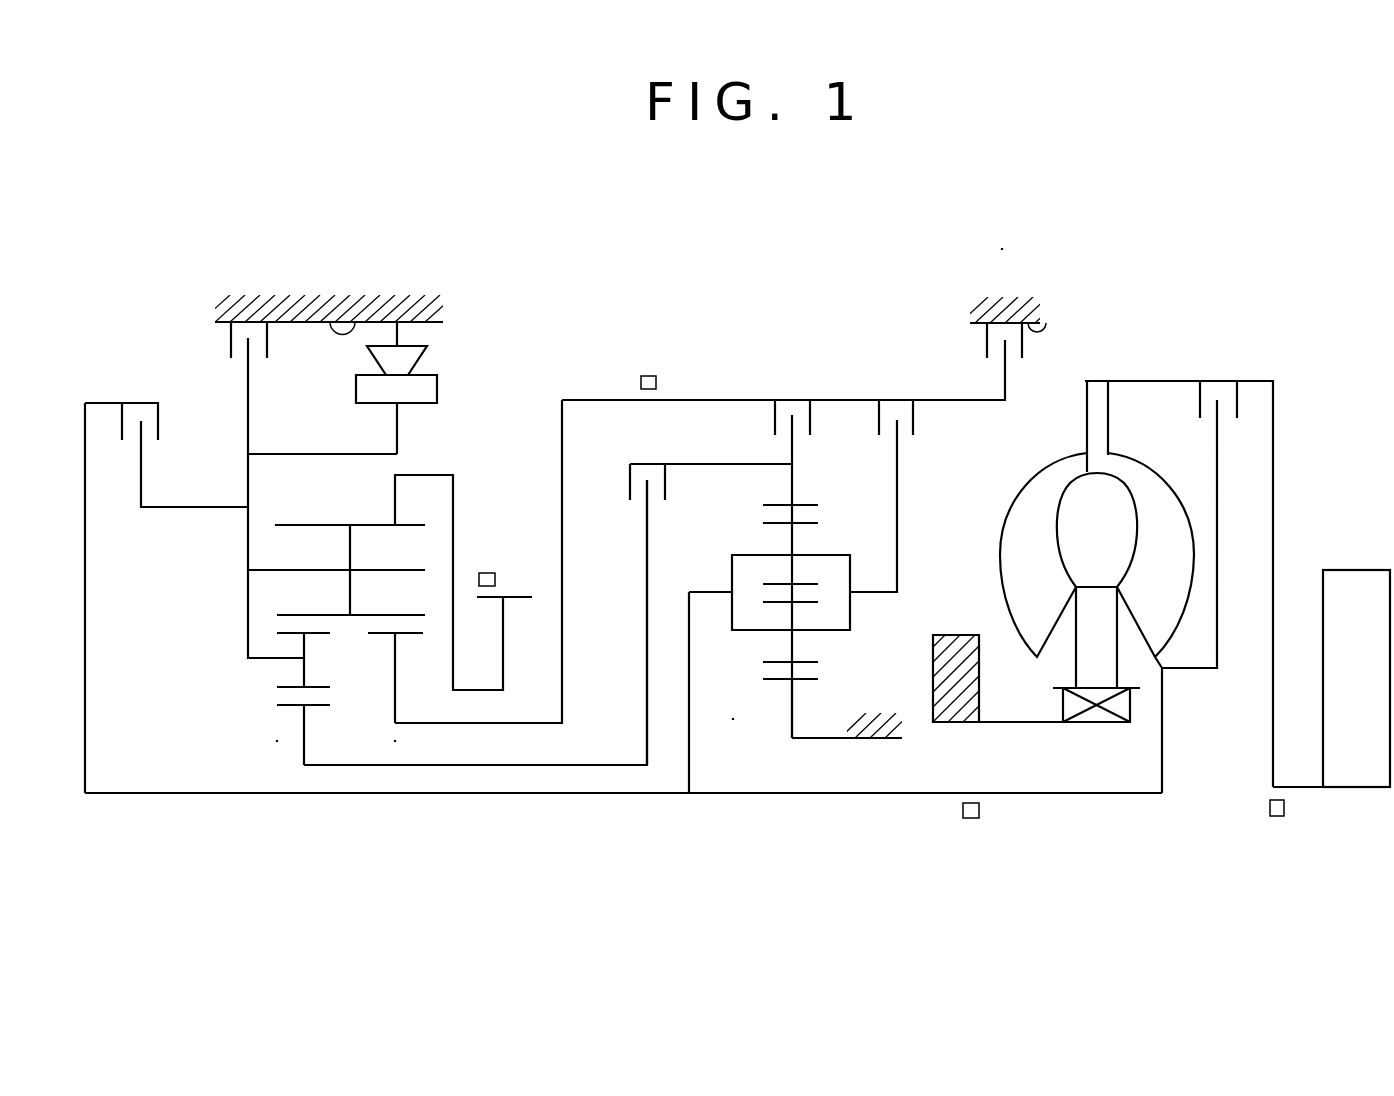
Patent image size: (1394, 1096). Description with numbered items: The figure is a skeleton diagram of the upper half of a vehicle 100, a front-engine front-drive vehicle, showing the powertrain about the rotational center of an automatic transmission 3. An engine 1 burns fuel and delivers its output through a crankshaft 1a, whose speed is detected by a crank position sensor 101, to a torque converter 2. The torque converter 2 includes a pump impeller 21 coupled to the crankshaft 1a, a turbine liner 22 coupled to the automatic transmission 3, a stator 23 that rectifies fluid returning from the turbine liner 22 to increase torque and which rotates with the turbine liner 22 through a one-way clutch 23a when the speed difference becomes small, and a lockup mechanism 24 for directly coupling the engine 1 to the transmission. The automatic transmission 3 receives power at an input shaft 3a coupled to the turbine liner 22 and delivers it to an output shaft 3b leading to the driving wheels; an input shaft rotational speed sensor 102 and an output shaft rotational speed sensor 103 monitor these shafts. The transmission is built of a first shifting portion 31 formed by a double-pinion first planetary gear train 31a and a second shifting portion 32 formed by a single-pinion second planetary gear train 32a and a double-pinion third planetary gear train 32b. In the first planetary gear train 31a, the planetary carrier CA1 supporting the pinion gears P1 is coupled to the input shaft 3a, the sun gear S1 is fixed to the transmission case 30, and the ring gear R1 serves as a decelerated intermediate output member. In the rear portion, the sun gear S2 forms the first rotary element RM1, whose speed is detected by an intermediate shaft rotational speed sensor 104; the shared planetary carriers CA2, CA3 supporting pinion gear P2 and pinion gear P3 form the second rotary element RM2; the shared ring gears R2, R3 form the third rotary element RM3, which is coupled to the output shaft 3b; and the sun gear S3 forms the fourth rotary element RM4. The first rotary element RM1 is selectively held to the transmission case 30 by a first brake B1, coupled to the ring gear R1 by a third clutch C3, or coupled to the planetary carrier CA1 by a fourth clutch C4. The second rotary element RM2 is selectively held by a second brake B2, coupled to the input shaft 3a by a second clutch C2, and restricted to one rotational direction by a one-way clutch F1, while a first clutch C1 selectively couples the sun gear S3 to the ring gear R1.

The engine 1 is at (1370, 570).
The crankshaft 1a is at (1302, 790).
The torque converter 2 is at (1137, 544).
The automatic transmission 3 is at (795, 308).
The input shaft 3a is at (832, 793).
The output shaft 3b is at (510, 597).
The pump impeller 21 is at (1020, 470).
The turbine liner 22 is at (1160, 468).
The stator 23 is at (1097, 585).
The one-way clutch 23a is at (1090, 723).
The lockup mechanism 24 is at (1243, 368).
The transmission case 30 is at (347, 322).
The first shifting portion 31 is at (827, 546).
The first planetary gear train 31a is at (735, 734).
The second shifting portion 32 is at (322, 525).
The second planetary gear train 32a is at (401, 755).
The third planetary gear train 32b is at (283, 755).
The vehicle 100 is at (1014, 246).
The crank position sensor 101 is at (1270, 812).
The input shaft rotational speed sensor 102 is at (971, 818).
The output shaft rotational speed sensor 103 is at (487, 573).
The intermediate shaft rotational speed sensor 104 is at (648, 376).
The first brake B1 is at (987, 346).
The second brake B2 is at (268, 340).
The first clutch C1 is at (630, 480).
The second clutch C2 is at (122, 422).
The third clutch C3 is at (775, 415).
The fourth clutch C4 is at (913, 418).
The planetary carrier CA1 is at (850, 617).
The planetary carrier CA2 is at (260, 572).
The planetary carrier CA3 is at (248, 602).
The one-way clutch F1 is at (459, 352).
The pinion gears P1 is at (802, 523).
The pinion gear P2 is at (360, 620).
The pinion gear P3 is at (282, 628).
The ring gear R1 is at (770, 505).
The ring gear R2 is at (345, 507).
The ring gear R3 is at (390, 520).
The first rotary element RM1 is at (735, 400).
The second rotary element RM2 is at (248, 405).
The third rotary element RM3 is at (430, 475).
The fourth rotary element RM4 is at (600, 765).
The sun gear S1 is at (777, 682).
The sun gear S2 is at (410, 633).
The sun gear S3 is at (292, 698).